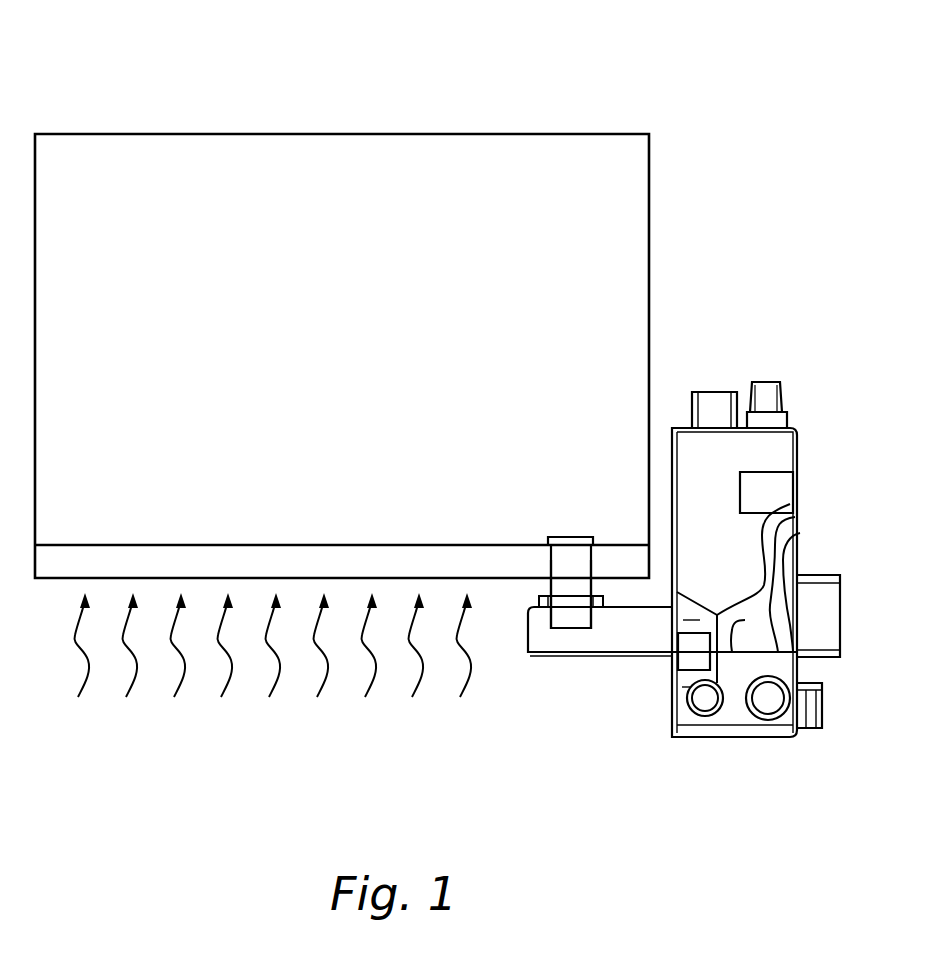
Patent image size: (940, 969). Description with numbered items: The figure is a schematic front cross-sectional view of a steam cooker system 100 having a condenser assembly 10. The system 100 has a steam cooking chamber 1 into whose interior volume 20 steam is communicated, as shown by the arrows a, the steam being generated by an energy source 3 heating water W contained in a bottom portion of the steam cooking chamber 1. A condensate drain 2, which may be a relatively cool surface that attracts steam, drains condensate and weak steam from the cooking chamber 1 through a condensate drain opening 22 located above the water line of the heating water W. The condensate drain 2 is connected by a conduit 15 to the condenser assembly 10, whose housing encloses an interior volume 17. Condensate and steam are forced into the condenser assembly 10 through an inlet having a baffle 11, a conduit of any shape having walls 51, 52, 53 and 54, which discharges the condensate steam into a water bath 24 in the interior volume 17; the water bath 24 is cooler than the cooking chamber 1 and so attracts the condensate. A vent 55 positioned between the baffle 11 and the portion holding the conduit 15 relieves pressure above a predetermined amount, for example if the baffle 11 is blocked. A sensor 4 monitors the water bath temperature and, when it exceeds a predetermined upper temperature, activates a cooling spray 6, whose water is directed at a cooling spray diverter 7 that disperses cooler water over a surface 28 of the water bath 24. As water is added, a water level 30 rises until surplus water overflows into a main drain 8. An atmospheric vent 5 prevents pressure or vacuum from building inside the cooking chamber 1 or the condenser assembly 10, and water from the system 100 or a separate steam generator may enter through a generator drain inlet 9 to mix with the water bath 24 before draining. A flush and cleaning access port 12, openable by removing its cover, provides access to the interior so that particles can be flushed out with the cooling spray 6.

The steam cooker system 100 is at (480, 108).
The steam cooking chamber 1 is at (590, 253).
The interior volume 20 is at (332, 362).
The heating water W is at (326, 573).
The condensate drain 2 is at (557, 537).
The condensate drain opening 22 is at (568, 537).
The conduit 15 is at (582, 640).
The energy source 3 is at (270, 692).
The arrows a is at (282, 645).
The condenser assembly 10 is at (803, 410).
The interior volume 17 is at (722, 519).
The atmospheric vent 5 is at (710, 393).
The cooling spray 6 is at (765, 383).
The cooling spray diverter 7 is at (777, 503).
The baffle 11 is at (790, 504).
The wall 53 is at (795, 517).
The water level 30 is at (800, 533).
The surface 28 is at (745, 620).
The wall 51 is at (688, 598).
The wall 52 is at (683, 620).
The vent 55 is at (682, 662).
The wall 54 is at (682, 687).
The water bath 24 is at (745, 689).
The sensor 4 is at (722, 716).
The generator drain inlet 9 is at (803, 736).
The main drain 8 is at (840, 625).
The flush and cleaning access port 12 is at (822, 712).